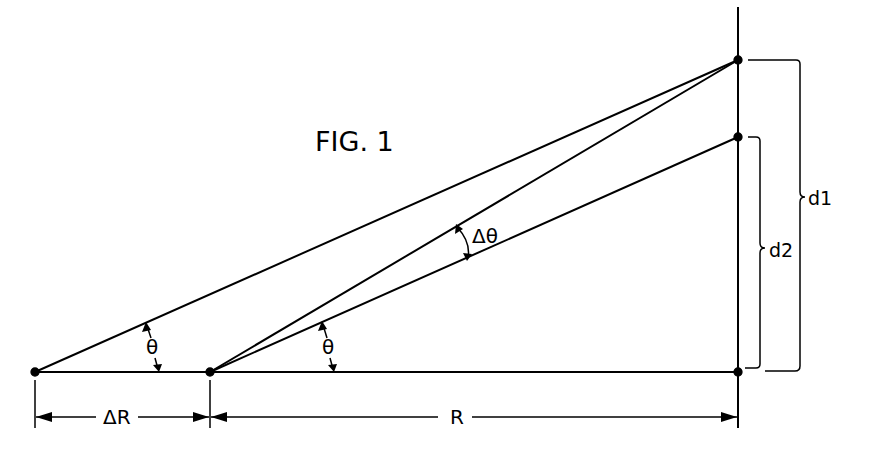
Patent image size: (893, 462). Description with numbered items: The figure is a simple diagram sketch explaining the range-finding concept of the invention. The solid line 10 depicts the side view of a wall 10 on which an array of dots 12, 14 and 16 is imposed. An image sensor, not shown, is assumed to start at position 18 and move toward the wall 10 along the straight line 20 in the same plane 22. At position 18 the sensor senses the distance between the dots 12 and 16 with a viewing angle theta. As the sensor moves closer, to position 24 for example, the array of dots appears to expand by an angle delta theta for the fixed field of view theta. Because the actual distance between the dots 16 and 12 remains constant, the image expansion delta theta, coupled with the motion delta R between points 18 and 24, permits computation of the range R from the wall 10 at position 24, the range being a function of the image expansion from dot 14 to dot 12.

The wall 10 is at (737, 18).
The dot 12 is at (739, 60).
The dot 14 is at (739, 137).
The dot 16 is at (740, 376).
The starting position 18 is at (35, 370).
The straight line 20 is at (407, 372).
The plane 22 is at (263, 230).
The closer position 24 is at (210, 370).